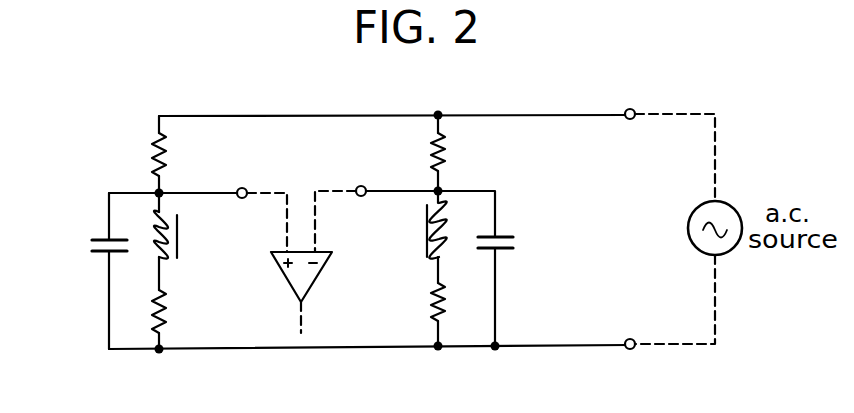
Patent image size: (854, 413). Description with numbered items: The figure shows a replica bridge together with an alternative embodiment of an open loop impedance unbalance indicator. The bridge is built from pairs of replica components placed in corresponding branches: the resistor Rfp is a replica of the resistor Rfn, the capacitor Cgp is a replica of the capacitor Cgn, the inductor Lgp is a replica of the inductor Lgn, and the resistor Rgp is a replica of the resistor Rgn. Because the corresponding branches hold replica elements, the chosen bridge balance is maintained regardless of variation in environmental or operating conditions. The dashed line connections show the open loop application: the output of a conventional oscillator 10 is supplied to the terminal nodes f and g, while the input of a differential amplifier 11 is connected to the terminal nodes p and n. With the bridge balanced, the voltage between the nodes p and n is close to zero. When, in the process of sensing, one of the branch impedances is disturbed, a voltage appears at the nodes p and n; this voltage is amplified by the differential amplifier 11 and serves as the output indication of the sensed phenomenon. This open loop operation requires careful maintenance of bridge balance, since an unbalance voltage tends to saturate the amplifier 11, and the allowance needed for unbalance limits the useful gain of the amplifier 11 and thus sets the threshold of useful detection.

The oscillator 10 is at (692, 222).
The differential amplifier 11 is at (316, 270).
The resistor Rfp is at (128, 154).
The inductor Lgp is at (190, 235).
The resistor Rgp is at (189, 311).
The capacitor Cgp is at (77, 247).
The resistor Rfn is at (468, 152).
The inductor Lgn is at (406, 229).
The resistor Rgn is at (410, 302).
The capacitor Cgn is at (522, 245).
The terminal node p is at (243, 177).
The terminal node n is at (361, 177).
The terminal node f is at (629, 98).
The terminal node g is at (631, 360).